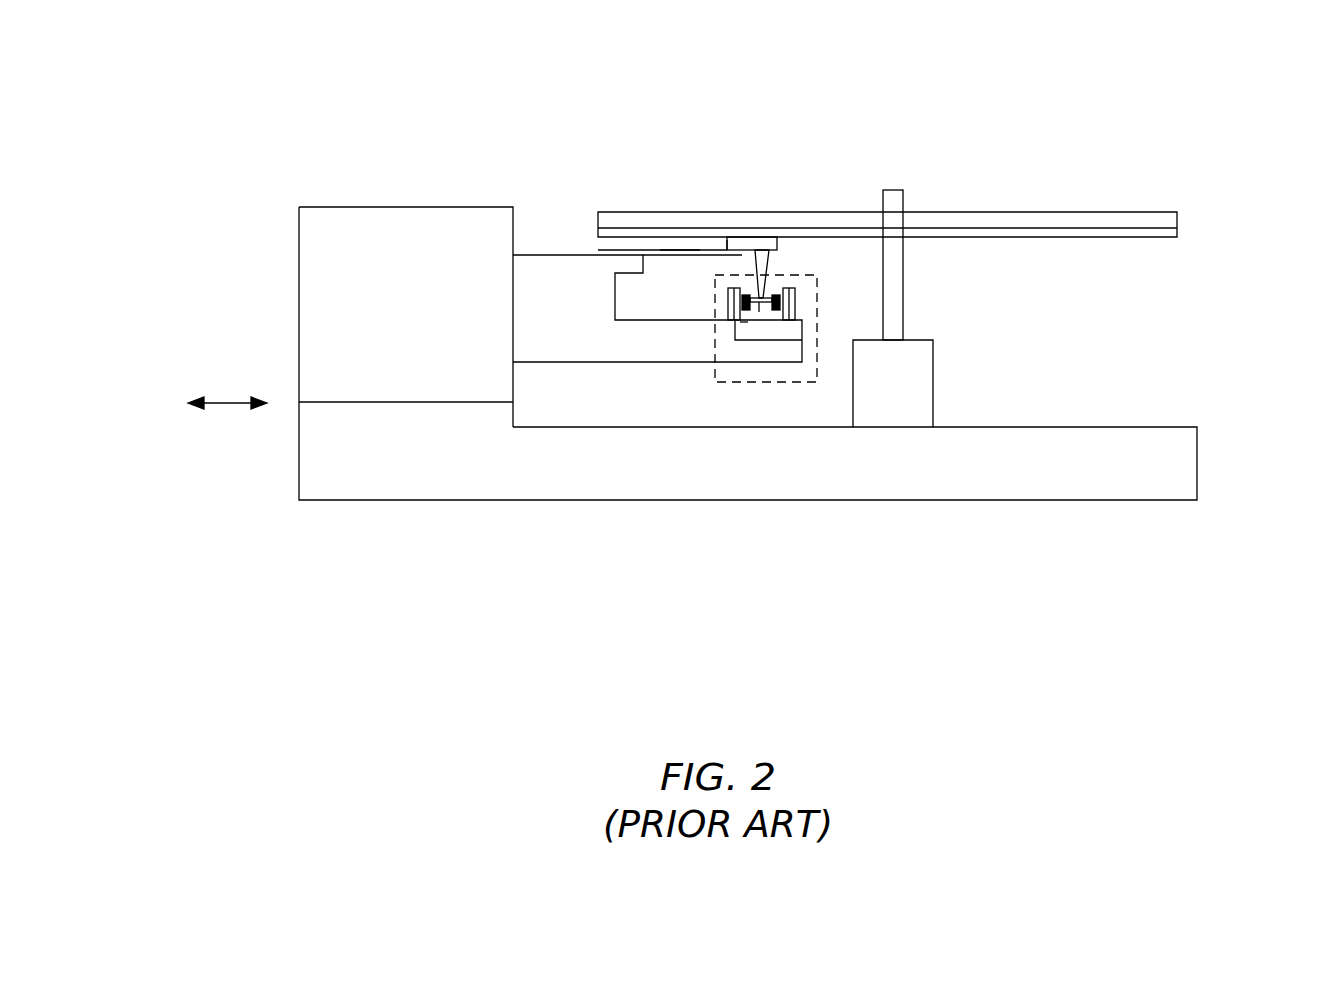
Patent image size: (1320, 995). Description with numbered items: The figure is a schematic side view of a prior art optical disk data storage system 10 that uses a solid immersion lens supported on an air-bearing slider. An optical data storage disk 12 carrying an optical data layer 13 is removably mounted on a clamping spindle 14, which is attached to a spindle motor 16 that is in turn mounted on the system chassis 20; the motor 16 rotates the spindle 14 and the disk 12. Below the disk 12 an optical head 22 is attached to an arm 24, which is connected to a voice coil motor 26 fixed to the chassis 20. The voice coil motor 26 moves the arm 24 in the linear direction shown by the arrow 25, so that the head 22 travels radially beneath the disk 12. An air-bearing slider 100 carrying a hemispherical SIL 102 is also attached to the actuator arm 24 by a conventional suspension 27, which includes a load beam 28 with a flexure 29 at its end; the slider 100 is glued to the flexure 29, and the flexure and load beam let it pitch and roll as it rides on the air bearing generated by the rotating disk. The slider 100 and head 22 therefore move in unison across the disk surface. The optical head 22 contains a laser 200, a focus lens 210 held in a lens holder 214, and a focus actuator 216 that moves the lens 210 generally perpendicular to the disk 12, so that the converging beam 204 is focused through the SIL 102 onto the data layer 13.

The optical disk data storage system 10 is at (420, 564).
The optical data storage disk 12 is at (1127, 212).
The optical data layer 13 is at (1127, 237).
The clamping spindle 14 is at (893, 245).
The spindle motor 16 is at (913, 383).
The system chassis 20 is at (1065, 470).
The optical head 22 is at (786, 383).
The actuator arm 24 is at (577, 363).
The arrow 25 is at (226, 400).
The voice coil motor 26 is at (366, 253).
The suspension 27 is at (598, 252).
The load beam 28 is at (680, 251).
The flexure 29 is at (727, 249).
The air-bearing slider 100 is at (758, 251).
The hemispherical SIL 102 is at (778, 260).
The laser 200 is at (804, 327).
The converging beam 204 is at (778, 280).
The focus lens 210 is at (759, 312).
The lens holder 214 is at (746, 327).
The focus actuator 216 is at (794, 303).